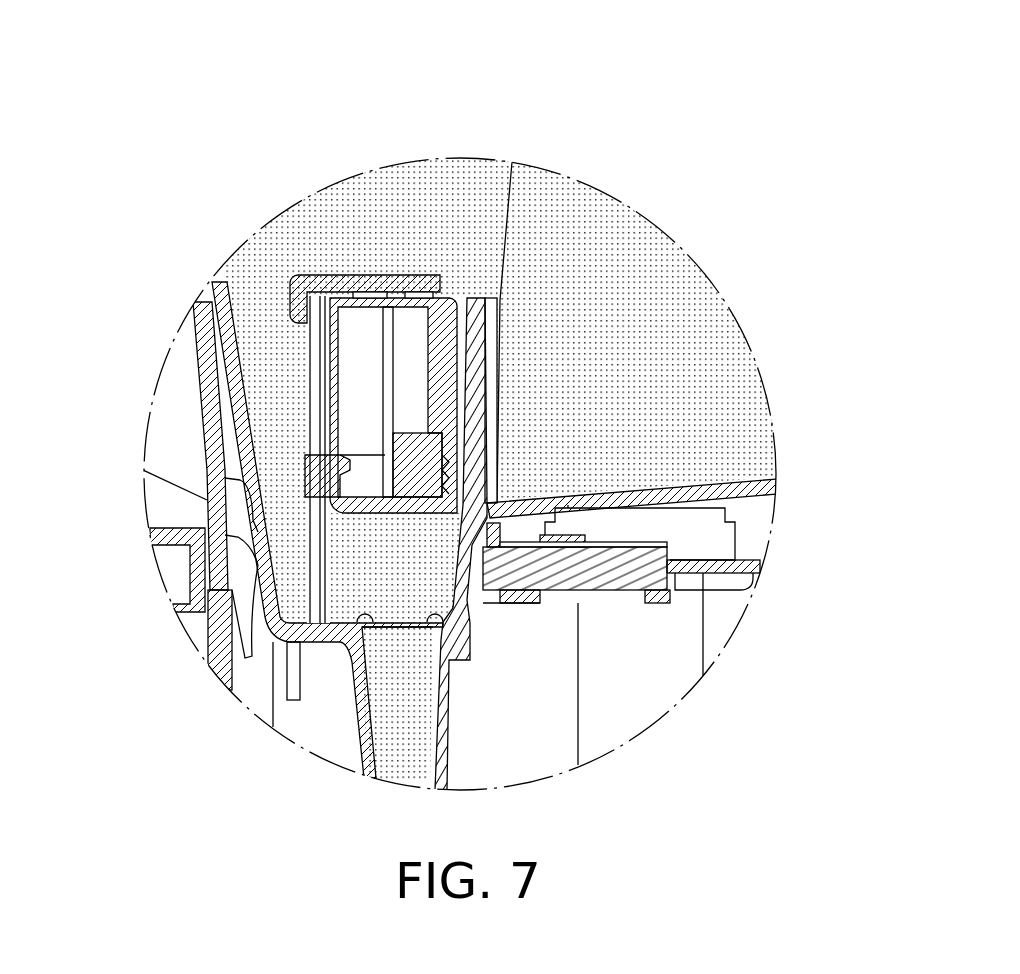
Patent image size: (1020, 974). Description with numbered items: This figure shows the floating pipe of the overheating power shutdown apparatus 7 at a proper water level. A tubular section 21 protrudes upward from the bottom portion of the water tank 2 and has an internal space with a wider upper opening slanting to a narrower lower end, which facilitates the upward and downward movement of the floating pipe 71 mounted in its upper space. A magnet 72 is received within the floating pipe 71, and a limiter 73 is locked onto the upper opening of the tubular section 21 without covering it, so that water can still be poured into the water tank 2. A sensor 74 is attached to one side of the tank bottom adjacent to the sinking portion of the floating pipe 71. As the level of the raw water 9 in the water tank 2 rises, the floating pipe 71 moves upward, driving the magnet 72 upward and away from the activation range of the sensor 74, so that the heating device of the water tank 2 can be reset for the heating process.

The water tank 2 is at (560, 496).
The overheating power shutdown apparatus 7 is at (193, 255).
The raw water 9 is at (438, 187).
The tubular section 21 is at (482, 357).
The floating pipe 71 is at (333, 353).
The magnet 72 is at (412, 457).
The limiter 73 is at (321, 276).
The sensor 74 is at (615, 578).